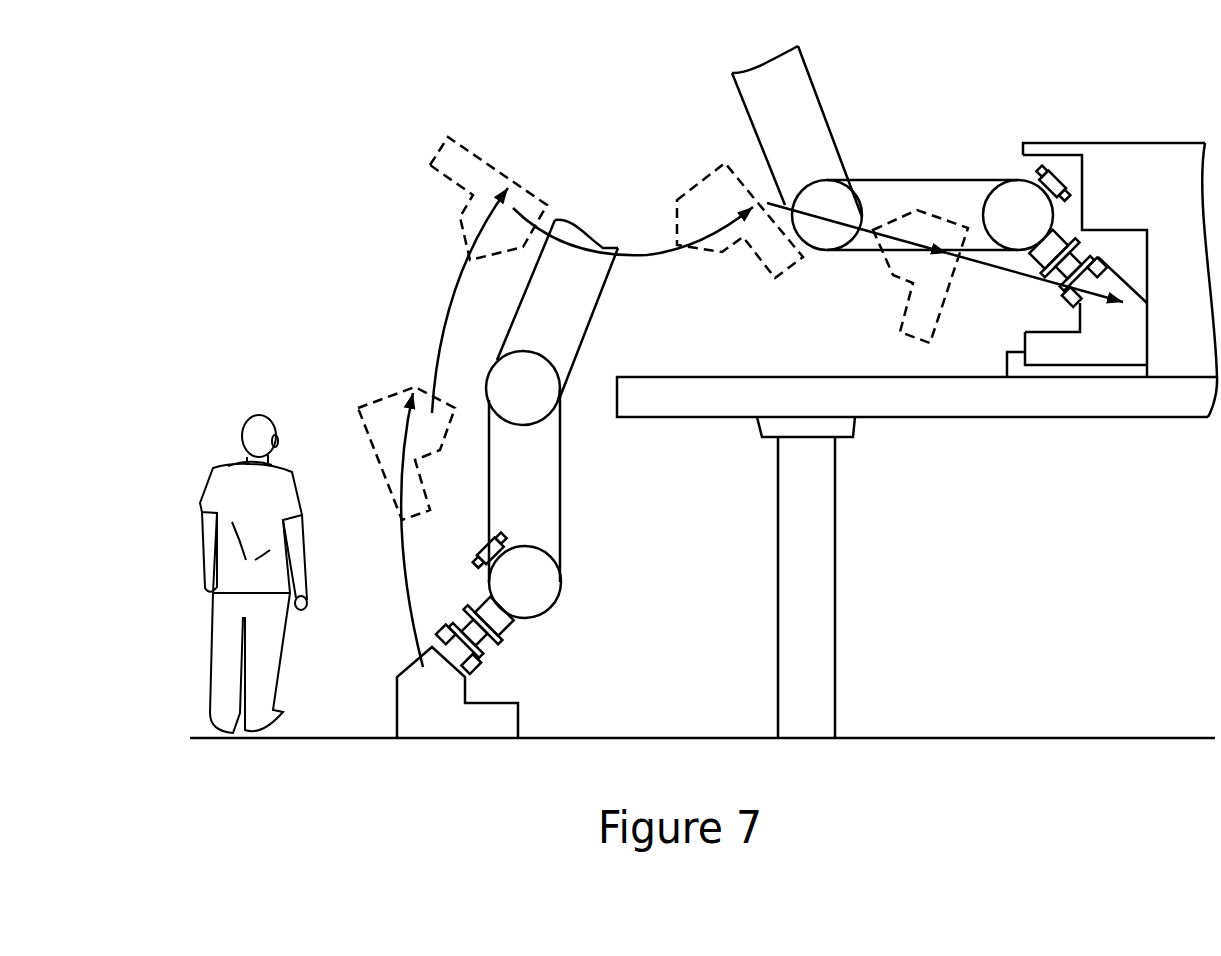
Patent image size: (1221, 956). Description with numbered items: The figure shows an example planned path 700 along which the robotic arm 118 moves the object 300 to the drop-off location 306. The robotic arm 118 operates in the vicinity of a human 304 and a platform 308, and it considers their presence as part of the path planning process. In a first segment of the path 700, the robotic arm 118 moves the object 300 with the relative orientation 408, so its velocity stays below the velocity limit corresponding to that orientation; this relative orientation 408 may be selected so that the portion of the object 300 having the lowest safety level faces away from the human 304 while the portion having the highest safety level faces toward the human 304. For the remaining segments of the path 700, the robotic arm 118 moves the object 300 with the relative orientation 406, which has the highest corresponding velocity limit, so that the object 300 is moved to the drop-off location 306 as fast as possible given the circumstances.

The robotic arm 118 is at (814, 58).
The object 300 is at (532, 667).
The human 304 is at (230, 467).
The drop-off location 306 is at (1067, 379).
The platform 308 is at (843, 434).
The relative orientation 406 is at (517, 248).
The relative orientation 408 is at (400, 428).
The planned path 700 is at (427, 277).